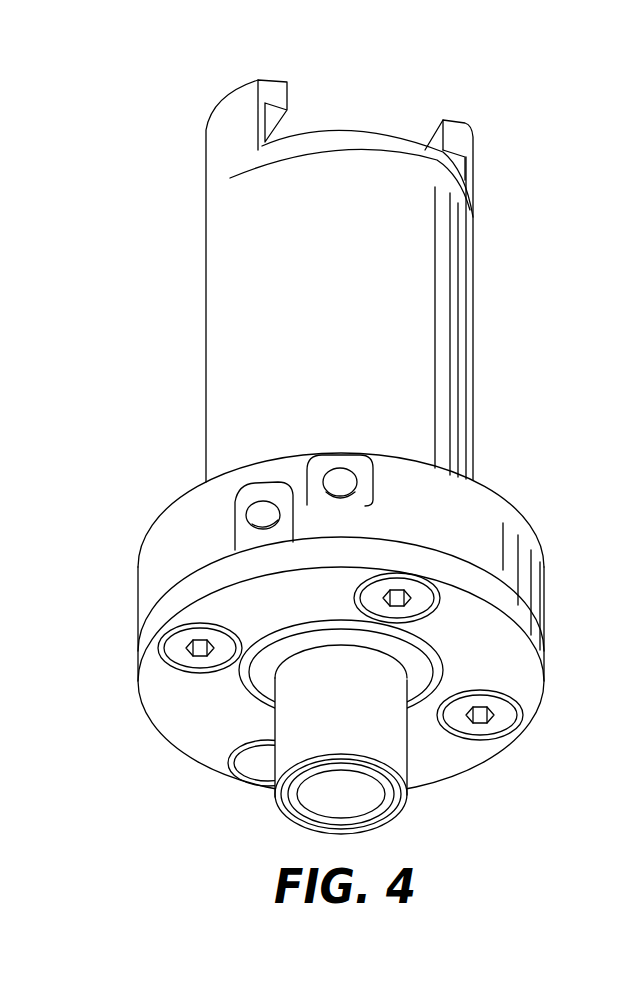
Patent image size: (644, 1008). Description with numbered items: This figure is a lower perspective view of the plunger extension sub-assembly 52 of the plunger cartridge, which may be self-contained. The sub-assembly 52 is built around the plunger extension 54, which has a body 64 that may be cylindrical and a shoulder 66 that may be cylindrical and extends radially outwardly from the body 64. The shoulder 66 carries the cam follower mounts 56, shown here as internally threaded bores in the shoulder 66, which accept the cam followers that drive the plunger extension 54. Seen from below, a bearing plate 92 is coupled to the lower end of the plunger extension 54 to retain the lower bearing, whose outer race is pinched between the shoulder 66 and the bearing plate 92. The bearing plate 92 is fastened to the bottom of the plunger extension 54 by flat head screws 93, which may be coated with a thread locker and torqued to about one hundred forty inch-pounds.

The plunger extension sub-assembly 52 is at (183, 76).
The plunger extension 54 is at (492, 468).
The cam follower mounts 56 is at (326, 470).
The body 64 is at (473, 282).
The shoulder 66 is at (544, 592).
The bearing plate 92 is at (535, 698).
The flat head screws 93 is at (430, 603).